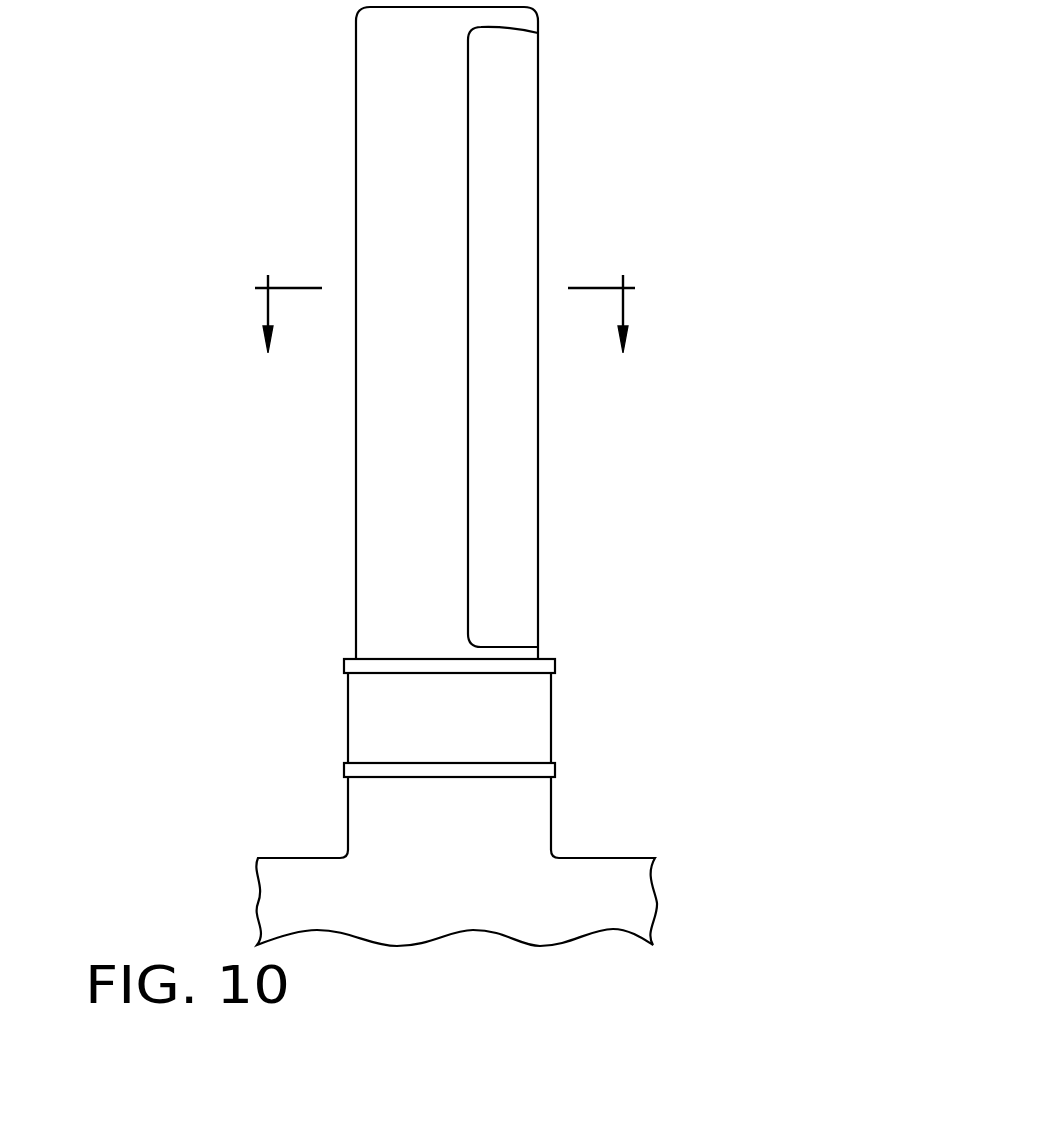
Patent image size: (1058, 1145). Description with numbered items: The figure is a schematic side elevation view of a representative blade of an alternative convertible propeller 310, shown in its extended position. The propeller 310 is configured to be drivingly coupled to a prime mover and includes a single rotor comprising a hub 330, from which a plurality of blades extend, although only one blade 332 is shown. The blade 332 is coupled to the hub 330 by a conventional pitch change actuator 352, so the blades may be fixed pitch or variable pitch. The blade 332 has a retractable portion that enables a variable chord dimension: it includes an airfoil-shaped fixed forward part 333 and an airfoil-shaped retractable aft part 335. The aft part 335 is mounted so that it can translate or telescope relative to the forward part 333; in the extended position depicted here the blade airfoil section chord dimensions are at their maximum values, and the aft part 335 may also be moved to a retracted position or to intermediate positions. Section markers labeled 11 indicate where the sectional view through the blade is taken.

The convertible propeller 310 is at (607, 110).
The blade 332 is at (368, 73).
The fixed forward part 333 is at (438, 312).
The retractable aft part 335 is at (503, 202).
The pitch change actuator 352 is at (496, 728).
The hub 330 is at (605, 858).
The section line 11- 11 is at (449, 318).